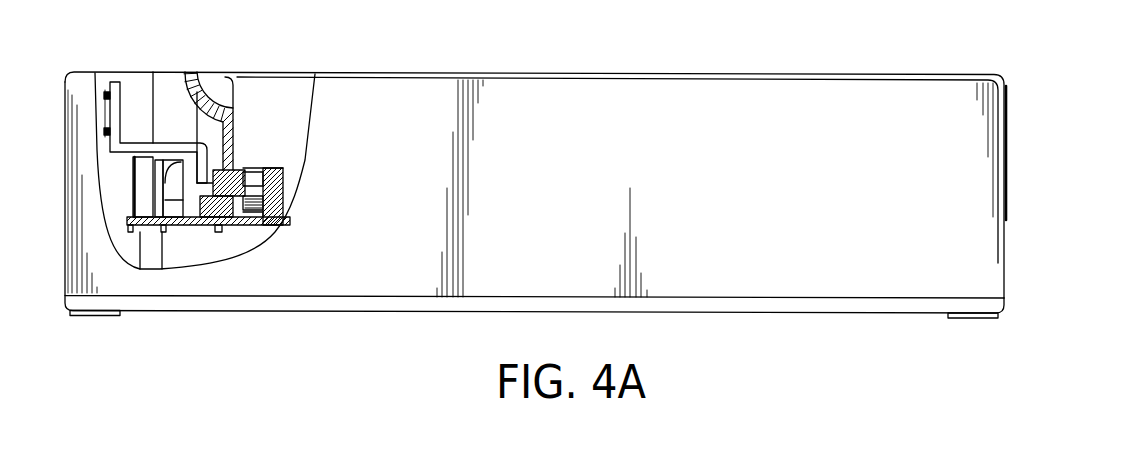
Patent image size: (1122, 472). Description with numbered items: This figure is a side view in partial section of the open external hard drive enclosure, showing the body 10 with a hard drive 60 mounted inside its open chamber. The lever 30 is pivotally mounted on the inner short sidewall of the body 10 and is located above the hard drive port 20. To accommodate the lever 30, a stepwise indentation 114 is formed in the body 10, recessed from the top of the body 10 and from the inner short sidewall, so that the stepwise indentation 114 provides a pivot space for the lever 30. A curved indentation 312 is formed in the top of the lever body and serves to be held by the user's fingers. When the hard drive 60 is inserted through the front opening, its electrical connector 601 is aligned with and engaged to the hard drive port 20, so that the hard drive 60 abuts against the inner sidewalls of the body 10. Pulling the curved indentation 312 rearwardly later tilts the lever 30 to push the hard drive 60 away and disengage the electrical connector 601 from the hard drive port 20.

The body 10 is at (1009, 240).
The hard drive port 20 is at (217, 212).
The lever 30 is at (247, 103).
The curved indentation 312 is at (197, 93).
The hard drive 60 is at (980, 143).
The stepwise indentation 114 is at (120, 97).
The electrical connector 601 is at (257, 218).